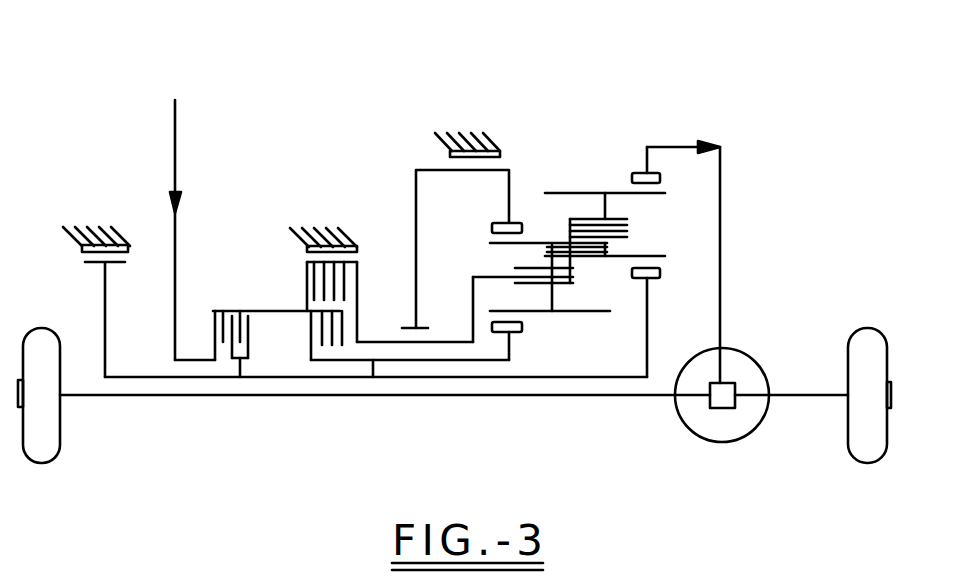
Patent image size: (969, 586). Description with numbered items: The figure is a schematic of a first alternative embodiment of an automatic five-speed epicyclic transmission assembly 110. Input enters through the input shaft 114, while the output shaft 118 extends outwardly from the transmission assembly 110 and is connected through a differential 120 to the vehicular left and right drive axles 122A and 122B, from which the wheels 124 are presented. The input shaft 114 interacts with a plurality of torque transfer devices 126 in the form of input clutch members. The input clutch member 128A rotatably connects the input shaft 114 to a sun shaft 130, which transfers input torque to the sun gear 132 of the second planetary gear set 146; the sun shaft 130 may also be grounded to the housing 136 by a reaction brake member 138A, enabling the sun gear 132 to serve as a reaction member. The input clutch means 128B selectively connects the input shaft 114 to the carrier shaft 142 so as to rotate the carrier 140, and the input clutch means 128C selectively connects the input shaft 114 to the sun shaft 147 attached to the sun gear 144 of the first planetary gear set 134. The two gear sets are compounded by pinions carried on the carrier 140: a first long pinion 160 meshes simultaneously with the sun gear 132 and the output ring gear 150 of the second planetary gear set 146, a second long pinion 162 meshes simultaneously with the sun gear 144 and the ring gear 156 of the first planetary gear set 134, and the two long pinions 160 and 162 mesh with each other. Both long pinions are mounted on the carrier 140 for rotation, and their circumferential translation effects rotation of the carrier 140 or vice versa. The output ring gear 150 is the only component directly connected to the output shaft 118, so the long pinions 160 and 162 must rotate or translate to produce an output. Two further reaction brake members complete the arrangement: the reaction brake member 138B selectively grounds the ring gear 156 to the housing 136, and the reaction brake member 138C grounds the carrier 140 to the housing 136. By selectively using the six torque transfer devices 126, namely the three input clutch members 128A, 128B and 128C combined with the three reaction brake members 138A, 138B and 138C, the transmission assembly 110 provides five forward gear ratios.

The transmission assembly 110 is at (566, 118).
The input shaft 114 is at (177, 362).
The output shaft 118 is at (688, 147).
The differential 120 is at (723, 410).
The left drive axle 122A is at (178, 397).
The right drive axle 122B is at (808, 393).
The wheels 124 is at (60, 442).
The torque transfer devices 126 is at (268, 222).
The input clutch member 128A is at (258, 328).
The input clutch means 128B is at (307, 277).
The input clutch means 128C is at (303, 333).
The sun shaft 130 is at (428, 377).
The sun gear 132 is at (657, 273).
The first planetary gear set 134 is at (522, 165).
The housing 136 is at (88, 228).
The reaction brake member 138A is at (80, 252).
The reaction brake member 138B is at (453, 153).
The reaction brake member 138C is at (357, 246).
The carrier 140 is at (570, 235).
The carrier shaft 142 is at (373, 337).
The sun gear 144 is at (517, 333).
The second planetary gear set 146 is at (630, 142).
The sun shaft 147 is at (373, 377).
The output ring gear 150 is at (657, 178).
The ring gear 156 is at (493, 228).
The first long pinion 160 is at (653, 250).
The second long pinion 162 is at (580, 313).